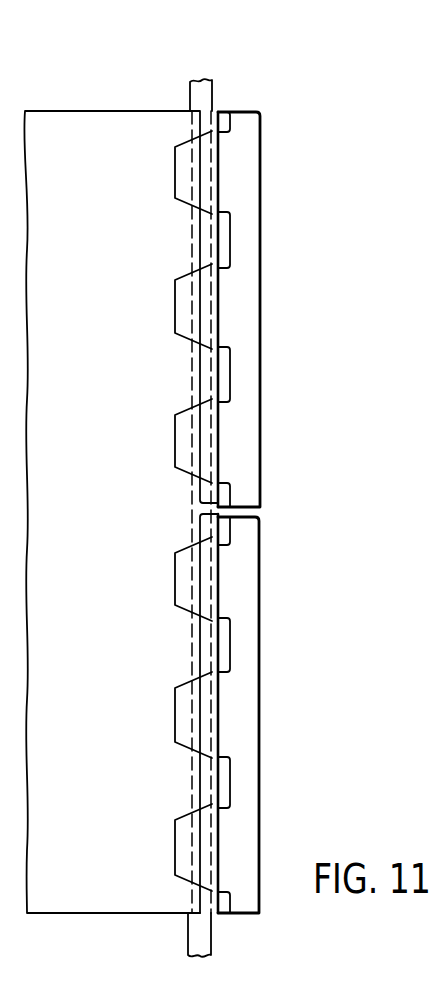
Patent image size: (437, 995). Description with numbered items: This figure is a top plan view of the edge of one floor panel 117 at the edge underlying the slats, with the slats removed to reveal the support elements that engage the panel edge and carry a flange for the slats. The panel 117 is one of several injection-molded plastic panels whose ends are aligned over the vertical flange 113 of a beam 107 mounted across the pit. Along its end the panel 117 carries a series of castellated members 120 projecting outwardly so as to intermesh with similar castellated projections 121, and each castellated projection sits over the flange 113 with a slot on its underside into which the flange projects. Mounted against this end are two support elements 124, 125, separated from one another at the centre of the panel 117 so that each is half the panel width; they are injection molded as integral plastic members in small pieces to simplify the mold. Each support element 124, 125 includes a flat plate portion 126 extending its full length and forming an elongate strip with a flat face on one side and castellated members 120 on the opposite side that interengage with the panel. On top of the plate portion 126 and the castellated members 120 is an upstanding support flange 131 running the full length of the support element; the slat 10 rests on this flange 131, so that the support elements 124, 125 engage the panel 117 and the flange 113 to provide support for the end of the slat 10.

The slat 10 is at (148, 450).
The beam 107 is at (213, 97).
The vertical flange 113 is at (191, 230).
The panel 117 is at (97, 627).
The castellated member 120 is at (175, 172).
The castellated projection 121 is at (231, 232).
The support element 124 is at (261, 281).
The support element 125 is at (261, 691).
The flat plate portion 126 is at (241, 312).
The upstanding support flange 131 is at (224, 459).